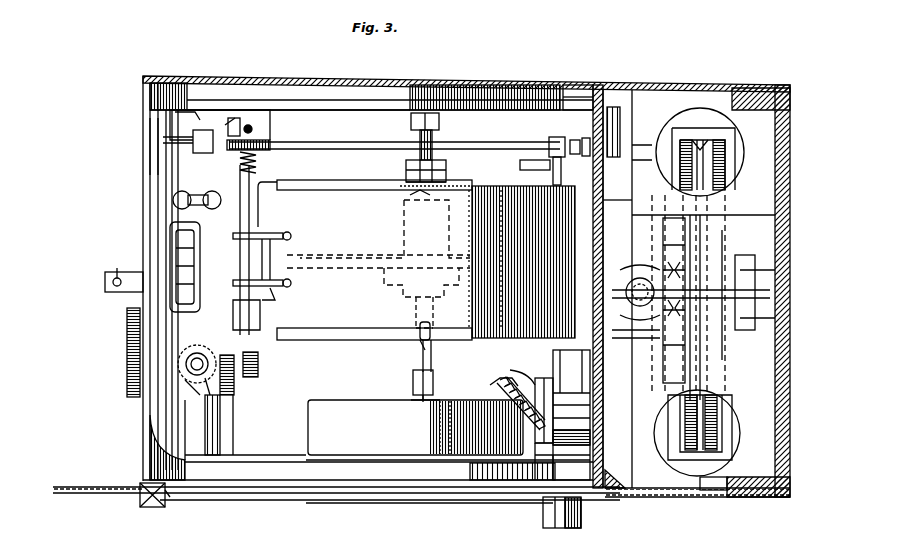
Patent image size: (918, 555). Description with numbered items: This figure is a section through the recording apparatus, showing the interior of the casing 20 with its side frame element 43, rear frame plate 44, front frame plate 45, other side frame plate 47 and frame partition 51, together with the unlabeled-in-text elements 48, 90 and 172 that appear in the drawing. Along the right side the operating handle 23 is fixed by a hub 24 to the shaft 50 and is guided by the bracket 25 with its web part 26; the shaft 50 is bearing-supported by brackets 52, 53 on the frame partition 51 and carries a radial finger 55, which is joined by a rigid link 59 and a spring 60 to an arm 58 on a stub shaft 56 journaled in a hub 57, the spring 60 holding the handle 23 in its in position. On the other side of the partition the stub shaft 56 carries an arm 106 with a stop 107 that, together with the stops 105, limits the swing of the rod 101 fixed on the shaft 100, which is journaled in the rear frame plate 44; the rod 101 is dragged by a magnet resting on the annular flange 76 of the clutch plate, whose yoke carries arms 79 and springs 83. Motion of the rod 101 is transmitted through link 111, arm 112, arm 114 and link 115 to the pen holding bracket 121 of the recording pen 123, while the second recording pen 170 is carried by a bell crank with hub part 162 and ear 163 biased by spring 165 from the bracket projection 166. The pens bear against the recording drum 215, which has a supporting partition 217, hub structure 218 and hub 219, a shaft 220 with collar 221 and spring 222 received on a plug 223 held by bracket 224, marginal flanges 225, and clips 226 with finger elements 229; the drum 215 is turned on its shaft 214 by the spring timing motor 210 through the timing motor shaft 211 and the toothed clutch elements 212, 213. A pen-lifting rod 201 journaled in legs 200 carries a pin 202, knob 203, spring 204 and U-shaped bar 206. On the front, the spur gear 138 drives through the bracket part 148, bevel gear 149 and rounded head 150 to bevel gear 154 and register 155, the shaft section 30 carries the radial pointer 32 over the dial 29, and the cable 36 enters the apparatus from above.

The casing 20 is at (297, 80).
The operating handle 23 is at (282, 500).
The hub 24 is at (545, 518).
The bracket 25 is at (150, 507).
The web part 26 is at (167, 500).
The dial 29 is at (127, 325).
The shaft section 30 is at (113, 292).
The radial pointer 32 is at (117, 272).
The cable 36 is at (708, 138).
The side frame element 43 is at (283, 458).
The rear frame plate 44 is at (790, 148).
The front frame plate 45 is at (148, 143).
The side frame plate 47 is at (440, 88).
The bottom plate 48 is at (398, 492).
The shaft 50 is at (560, 448).
The frame partition 51 is at (620, 458).
The bracket 52 is at (571, 415).
The bracket 53 is at (590, 215).
The radial finger 55 is at (500, 380).
The stub shaft 56 is at (540, 440).
The hub 57 is at (571, 409).
The arm 58 is at (540, 380).
The rigid link 59 is at (530, 380).
The spring 60 is at (500, 388).
The annular flange 76 is at (682, 395).
The arms 79 is at (672, 240).
The springs 83 is at (674, 280).
The roller 90 is at (715, 420).
The shaft 100 is at (740, 295).
The rod 101 is at (640, 282).
The stops 105 is at (645, 232).
The arm 106 is at (618, 382).
The stop 107 is at (645, 326).
The link 111 is at (585, 200).
The arm 112 is at (553, 175).
The arm 114 is at (196, 114).
The link 115 is at (197, 193).
The pen holding bracket 121 is at (280, 300).
The recording pen 123 is at (275, 282).
The spur gear 138 is at (234, 395).
The bracket part 148 is at (185, 385).
The bevel gear 149 is at (205, 395).
The rounded head 150 is at (193, 385).
The bevel gear 154 is at (180, 358).
The register 155 is at (170, 240).
The hub part 162 is at (240, 127).
The ear 163 is at (252, 120).
The spring 165 is at (232, 124).
The bracket projection 166 is at (195, 112).
The recording pen 170 is at (270, 216).
The pivot 172 is at (253, 129).
The legs 200 is at (160, 183).
The rod 201 is at (285, 240).
The pin 202 is at (245, 362).
The knob 203 is at (290, 143).
The spring 204 is at (262, 164).
The U-shaped bar 206 is at (288, 284).
The spring timing motor 210 is at (360, 400).
The timing motor shaft 211 is at (430, 392).
The toothed clutch element 212 is at (412, 380).
The toothed clutch element 213 is at (420, 356).
The shaft 214 is at (414, 306).
The recording drum 215 is at (365, 190).
The supporting partition 217 is at (300, 248).
The hub structure 218 is at (392, 286).
The hub 219 is at (395, 240).
The shaft 220 is at (470, 188).
The collar 221 is at (446, 166).
The spring 222 is at (408, 180).
The plug 223 is at (418, 138).
The bracket 224 is at (440, 124).
The marginal flanges 225 is at (320, 190).
The clips 226 is at (415, 200).
The finger element 229 is at (418, 328).